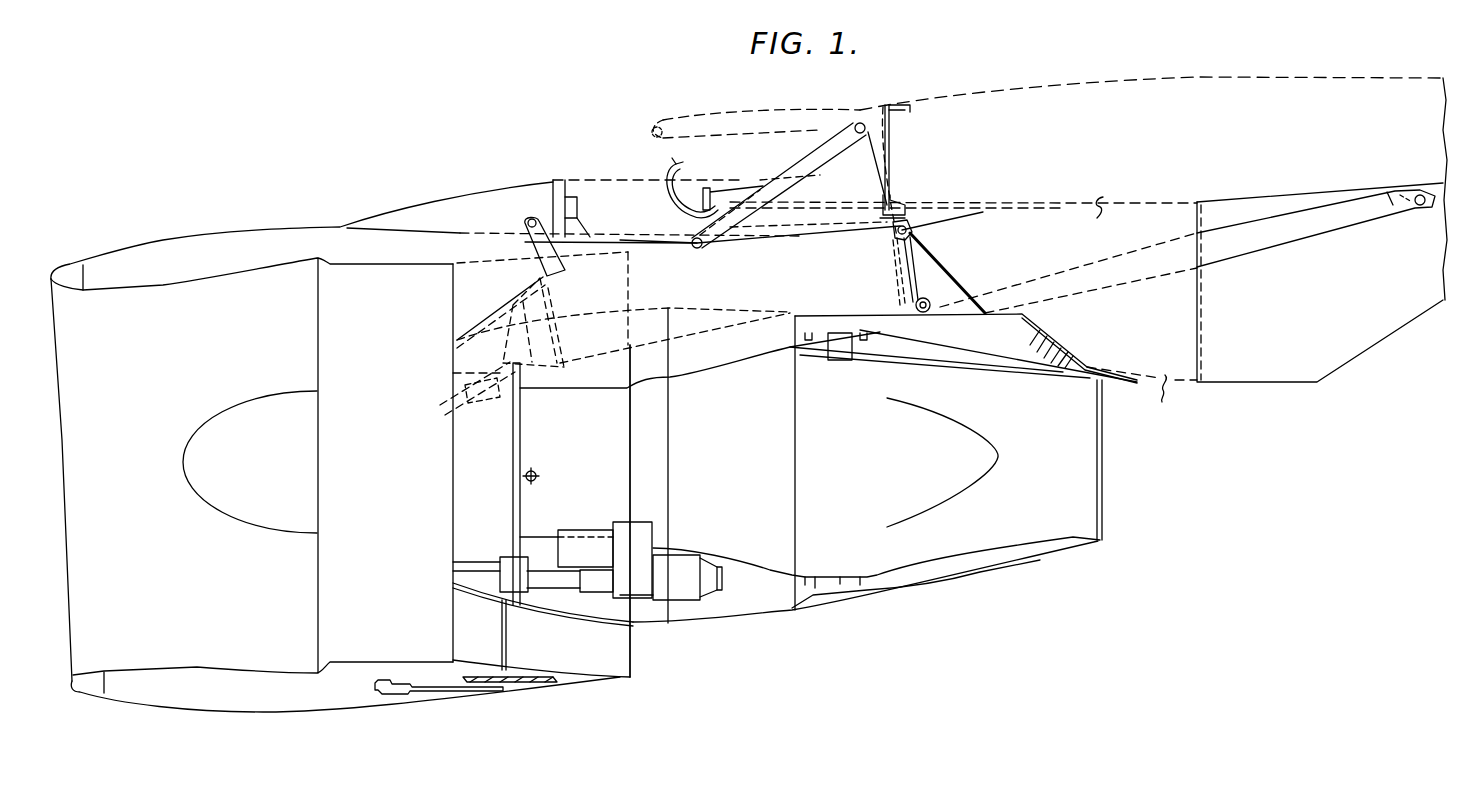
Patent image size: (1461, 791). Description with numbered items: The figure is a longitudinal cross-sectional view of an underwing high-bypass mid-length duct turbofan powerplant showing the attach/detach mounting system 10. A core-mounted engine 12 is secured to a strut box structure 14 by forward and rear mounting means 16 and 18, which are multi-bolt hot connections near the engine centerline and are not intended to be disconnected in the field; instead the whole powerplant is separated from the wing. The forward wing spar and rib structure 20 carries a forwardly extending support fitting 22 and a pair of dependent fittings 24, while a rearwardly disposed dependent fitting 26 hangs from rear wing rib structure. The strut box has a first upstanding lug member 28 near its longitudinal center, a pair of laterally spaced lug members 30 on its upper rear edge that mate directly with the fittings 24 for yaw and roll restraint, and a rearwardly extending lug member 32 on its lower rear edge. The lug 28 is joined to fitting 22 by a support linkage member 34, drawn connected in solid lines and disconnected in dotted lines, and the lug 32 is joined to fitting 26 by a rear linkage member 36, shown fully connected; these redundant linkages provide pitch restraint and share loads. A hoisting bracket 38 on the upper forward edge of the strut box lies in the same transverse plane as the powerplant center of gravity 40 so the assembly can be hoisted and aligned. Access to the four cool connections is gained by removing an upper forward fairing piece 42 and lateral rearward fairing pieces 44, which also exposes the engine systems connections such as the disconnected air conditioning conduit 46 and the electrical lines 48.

The underwing attach/detach mounting system 10 is at (1033, 166).
The core-mounted engine 12 is at (811, 492).
The strut box structure 14 is at (828, 241).
The forward mounting means 16 is at (497, 390).
The rear mounting means 18 is at (845, 360).
The forward wing spar and rib structure 20 is at (890, 155).
The forwardly extending support fitting 22 is at (885, 138).
The dependent fittings 24 is at (912, 200).
The rearwardly disposed dependent fitting 26 is at (1435, 190).
The first upstanding lug member 28 is at (720, 247).
The laterally spaced lug members 30 is at (895, 236).
The rearwardly extending lug member 32 is at (925, 295).
The support linkage member 34 is at (786, 173).
The rear linkage member 36 is at (1257, 258).
The hoisting hard point or bracket 38 is at (530, 248).
The powerplant center of gravity 40 is at (537, 480).
The upper forward fairing piece 42 is at (706, 173).
The lateral rearward fairing pieces 44 is at (1142, 391).
The air conditioning conduit 46 is at (715, 186).
The electrical lines 48 is at (683, 240).